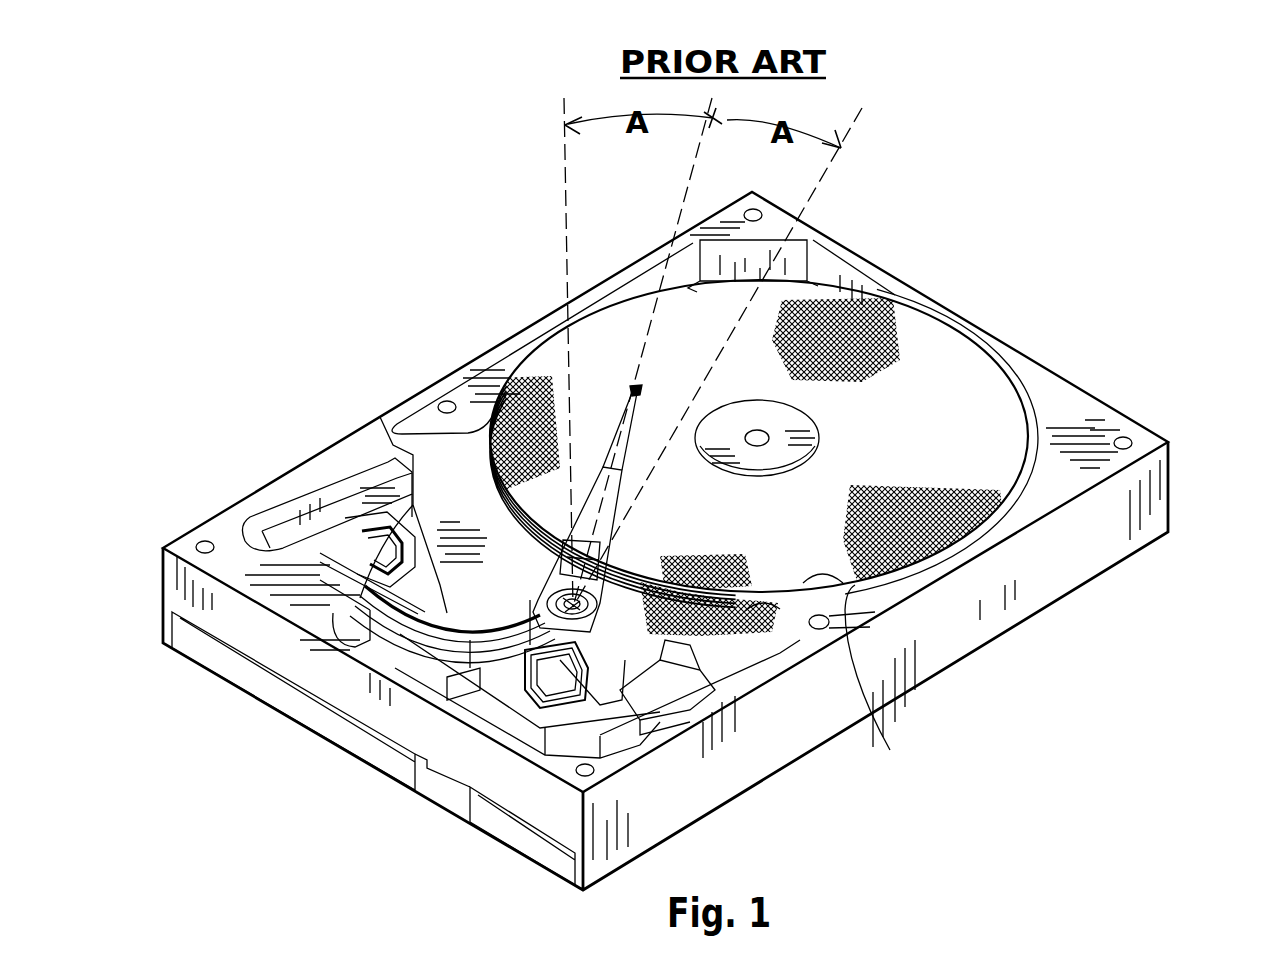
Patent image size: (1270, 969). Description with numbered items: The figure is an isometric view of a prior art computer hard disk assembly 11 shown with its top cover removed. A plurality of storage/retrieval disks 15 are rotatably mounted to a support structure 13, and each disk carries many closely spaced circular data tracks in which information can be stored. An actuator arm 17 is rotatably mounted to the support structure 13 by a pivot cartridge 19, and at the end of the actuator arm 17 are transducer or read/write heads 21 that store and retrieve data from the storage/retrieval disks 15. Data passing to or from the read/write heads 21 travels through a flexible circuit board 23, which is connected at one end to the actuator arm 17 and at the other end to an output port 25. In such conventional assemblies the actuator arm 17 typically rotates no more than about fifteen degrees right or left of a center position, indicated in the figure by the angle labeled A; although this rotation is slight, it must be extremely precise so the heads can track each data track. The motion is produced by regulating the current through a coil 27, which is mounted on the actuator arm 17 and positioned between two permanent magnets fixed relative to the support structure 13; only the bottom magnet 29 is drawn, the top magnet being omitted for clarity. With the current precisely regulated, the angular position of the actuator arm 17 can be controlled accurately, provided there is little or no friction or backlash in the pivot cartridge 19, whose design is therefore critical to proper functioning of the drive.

The computer hard disk assembly 11 is at (358, 282).
The support structure 13 is at (1062, 412).
The storage/retrieval disks 15 is at (805, 600).
The actuator arm 17 is at (593, 527).
The pivot cartridge 19 is at (440, 625).
The read/write heads 21 is at (636, 390).
The flexible circuit board 23 is at (427, 632).
The output port 25 is at (318, 515).
The coil 27 is at (527, 690).
The bottom magnet 29 is at (620, 697).